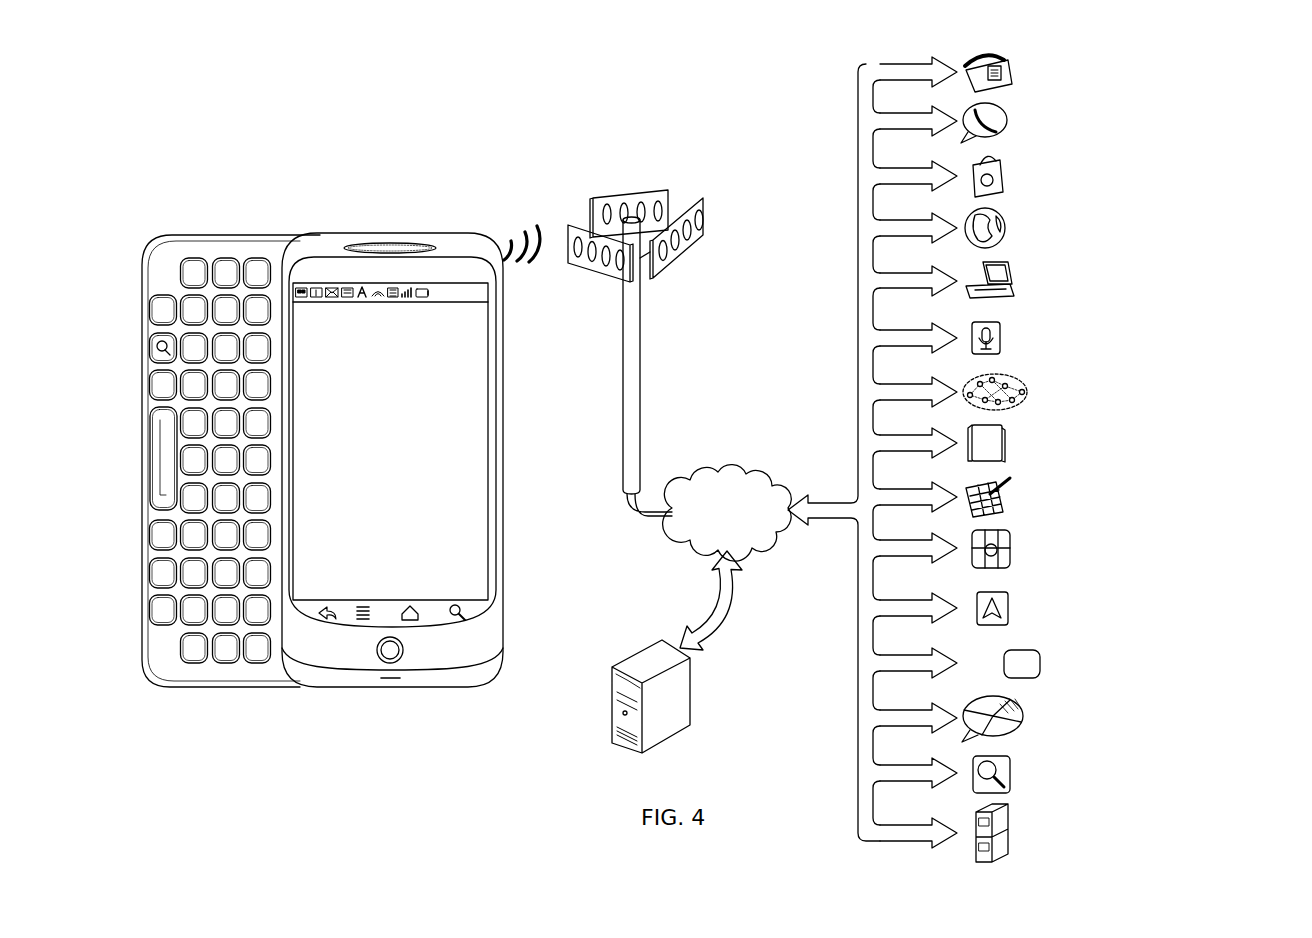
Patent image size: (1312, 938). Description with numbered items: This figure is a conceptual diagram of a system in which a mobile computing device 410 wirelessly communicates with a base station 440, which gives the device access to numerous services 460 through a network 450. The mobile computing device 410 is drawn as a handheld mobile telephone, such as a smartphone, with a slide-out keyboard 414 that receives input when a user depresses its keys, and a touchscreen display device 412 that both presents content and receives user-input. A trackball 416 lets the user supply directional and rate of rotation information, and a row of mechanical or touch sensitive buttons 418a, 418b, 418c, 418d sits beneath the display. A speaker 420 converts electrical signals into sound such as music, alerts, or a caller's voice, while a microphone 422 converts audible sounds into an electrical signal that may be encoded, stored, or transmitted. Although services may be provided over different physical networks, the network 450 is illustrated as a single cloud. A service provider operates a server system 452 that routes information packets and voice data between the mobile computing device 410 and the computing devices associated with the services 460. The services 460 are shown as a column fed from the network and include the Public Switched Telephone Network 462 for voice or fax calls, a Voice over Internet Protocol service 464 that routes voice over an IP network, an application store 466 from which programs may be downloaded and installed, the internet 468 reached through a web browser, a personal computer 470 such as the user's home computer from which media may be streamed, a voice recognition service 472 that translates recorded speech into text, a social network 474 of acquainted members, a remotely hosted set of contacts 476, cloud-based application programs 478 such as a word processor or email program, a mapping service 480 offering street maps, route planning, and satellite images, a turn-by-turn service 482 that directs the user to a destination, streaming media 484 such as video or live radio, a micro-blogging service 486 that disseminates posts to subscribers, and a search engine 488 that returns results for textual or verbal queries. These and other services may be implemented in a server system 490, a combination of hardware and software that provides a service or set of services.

The mobile computing device 410 is at (443, 180).
The touchscreen display device 412 is at (497, 448).
The keyboard 414 is at (249, 234).
The trackball 416 is at (404, 650).
The button 418a is at (327, 604).
The button 418b is at (363, 604).
The button 418c is at (411, 604).
The button 418d is at (457, 604).
The speaker 420 is at (396, 243).
The microphone 422 is at (392, 682).
The base station 440 is at (683, 164).
The network 450 is at (729, 471).
The server system 452 is at (695, 695).
The services 460 is at (1293, 52).
The Public Switched Telephone Network 462 is at (1012, 74).
The Voice over Internet Protocol service 464 is at (1010, 118).
The application store 466 is at (1008, 172).
The internet 468 is at (1008, 232).
The personal computer 470 is at (1016, 276).
The voice recognition service 472 is at (1006, 330).
The social network 474 is at (1026, 380).
The contacts 476 is at (1012, 444).
The cloud-based application programs 478 is at (1010, 497).
The mapping service 480 is at (1012, 545).
The turn-by-turn service 482 is at (1010, 602).
The streaming media 484 is at (1042, 656).
The micro-blogging service 486 is at (1024, 712).
The search engine 488 is at (1012, 769).
The server system 490 is at (1012, 824).